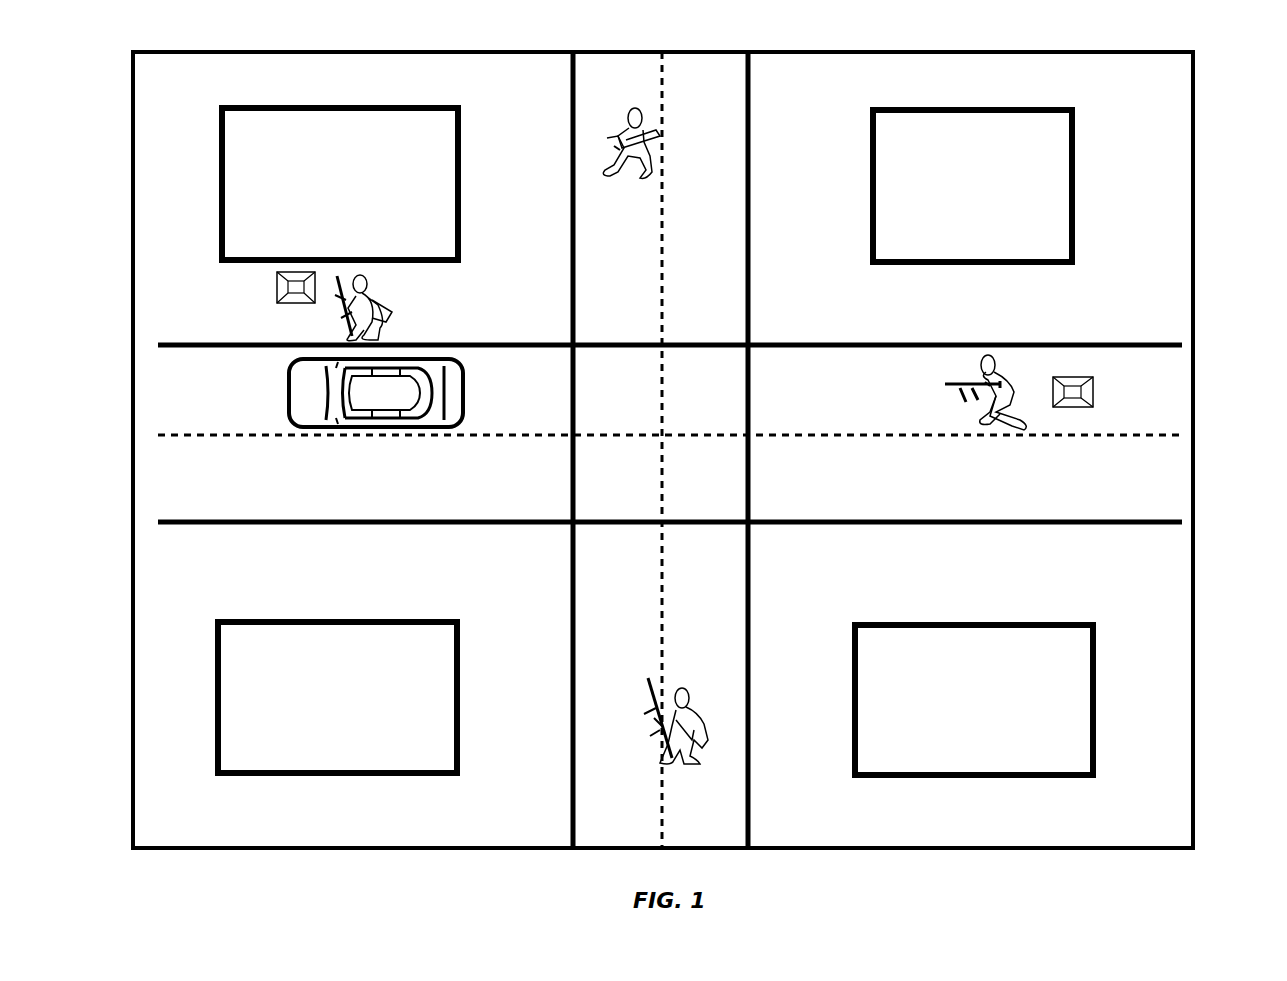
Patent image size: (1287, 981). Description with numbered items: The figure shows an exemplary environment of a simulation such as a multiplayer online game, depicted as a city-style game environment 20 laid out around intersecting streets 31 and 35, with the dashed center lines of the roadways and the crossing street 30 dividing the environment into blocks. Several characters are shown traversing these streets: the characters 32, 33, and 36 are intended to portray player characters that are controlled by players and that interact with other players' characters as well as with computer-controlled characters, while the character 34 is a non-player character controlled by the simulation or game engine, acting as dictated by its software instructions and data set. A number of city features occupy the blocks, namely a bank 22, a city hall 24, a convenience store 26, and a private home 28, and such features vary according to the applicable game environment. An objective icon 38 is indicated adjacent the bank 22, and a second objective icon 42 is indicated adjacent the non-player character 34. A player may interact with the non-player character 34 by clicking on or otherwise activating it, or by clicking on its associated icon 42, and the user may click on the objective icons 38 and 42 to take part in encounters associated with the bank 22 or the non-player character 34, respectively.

The game environment 20 is at (1214, 98).
The bank 22 is at (460, 183).
The city hall 24 is at (1075, 186).
The convenience store 26 is at (460, 697).
The private home 28 is at (1096, 699).
The vertical street 30 is at (751, 624).
The street 31 is at (975, 527).
The player character 32 is at (386, 318).
The player character 33 is at (622, 122).
The non-player character 34 is at (1014, 394).
The street 35 is at (468, 398).
The player character 36 is at (640, 688).
The objective icon 38 is at (293, 305).
The objective icon 42 is at (1094, 394).